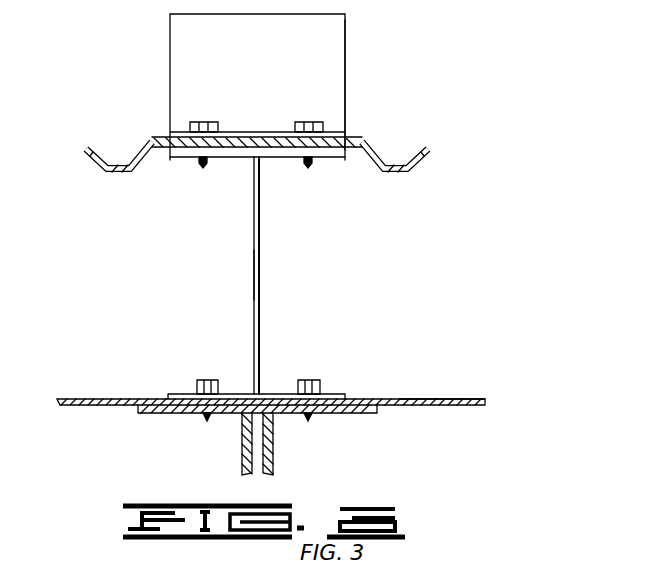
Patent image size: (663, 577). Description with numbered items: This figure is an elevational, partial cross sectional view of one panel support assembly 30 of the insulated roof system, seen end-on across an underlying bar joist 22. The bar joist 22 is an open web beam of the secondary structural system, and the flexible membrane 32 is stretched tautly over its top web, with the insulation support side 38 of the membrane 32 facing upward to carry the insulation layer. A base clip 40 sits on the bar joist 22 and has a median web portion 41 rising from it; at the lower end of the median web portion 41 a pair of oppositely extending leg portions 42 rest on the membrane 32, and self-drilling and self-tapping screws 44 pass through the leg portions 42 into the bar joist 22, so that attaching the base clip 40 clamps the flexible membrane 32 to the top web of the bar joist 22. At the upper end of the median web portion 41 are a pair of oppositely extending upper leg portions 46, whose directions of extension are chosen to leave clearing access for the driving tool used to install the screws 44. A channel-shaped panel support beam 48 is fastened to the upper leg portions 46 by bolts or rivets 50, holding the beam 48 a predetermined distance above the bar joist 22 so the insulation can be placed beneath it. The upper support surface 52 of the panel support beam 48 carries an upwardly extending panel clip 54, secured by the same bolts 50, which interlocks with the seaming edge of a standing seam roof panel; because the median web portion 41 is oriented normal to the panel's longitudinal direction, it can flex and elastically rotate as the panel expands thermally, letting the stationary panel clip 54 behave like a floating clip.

The open web beam 22 is at (242, 445).
The panel support assembly 30 is at (170, 48).
The flexible membrane 32 is at (468, 399).
The insulation support side 38 is at (402, 399).
The base clip 40 is at (262, 274).
The median web portion 41 is at (253, 268).
The leg portion 42 is at (178, 397).
The self-drilling and self-tapping screw 44 is at (205, 379).
The upper leg portion 46 is at (230, 158).
The panel support beam 48 is at (360, 137).
The bolt or rivet 50 is at (203, 121).
The upper support surface 52 is at (160, 138).
The panel clip 54 is at (335, 60).